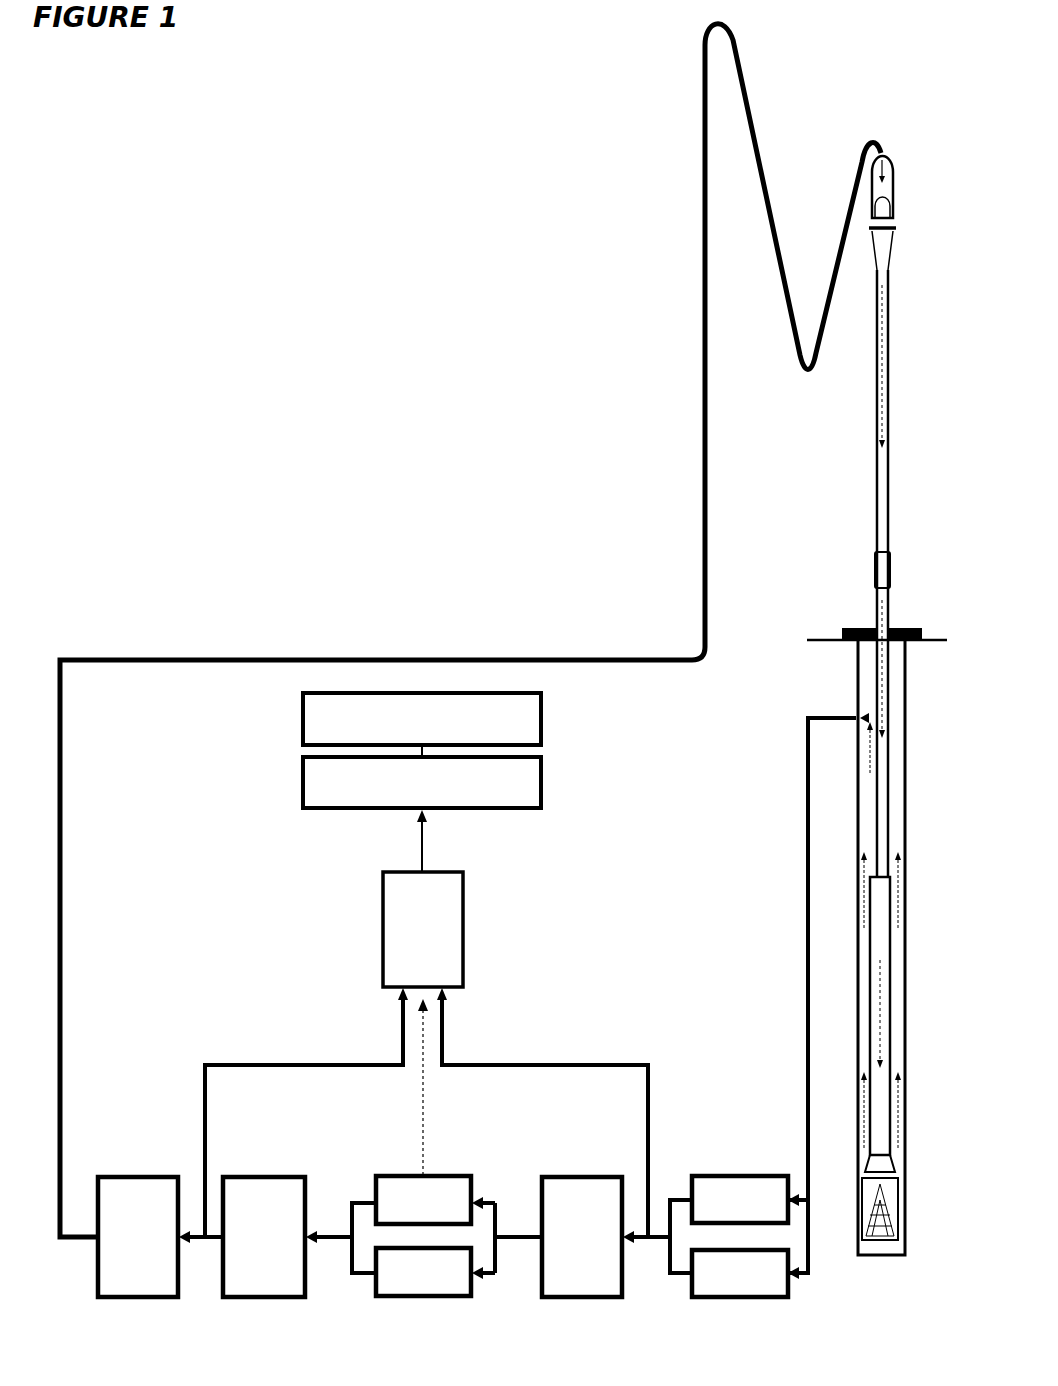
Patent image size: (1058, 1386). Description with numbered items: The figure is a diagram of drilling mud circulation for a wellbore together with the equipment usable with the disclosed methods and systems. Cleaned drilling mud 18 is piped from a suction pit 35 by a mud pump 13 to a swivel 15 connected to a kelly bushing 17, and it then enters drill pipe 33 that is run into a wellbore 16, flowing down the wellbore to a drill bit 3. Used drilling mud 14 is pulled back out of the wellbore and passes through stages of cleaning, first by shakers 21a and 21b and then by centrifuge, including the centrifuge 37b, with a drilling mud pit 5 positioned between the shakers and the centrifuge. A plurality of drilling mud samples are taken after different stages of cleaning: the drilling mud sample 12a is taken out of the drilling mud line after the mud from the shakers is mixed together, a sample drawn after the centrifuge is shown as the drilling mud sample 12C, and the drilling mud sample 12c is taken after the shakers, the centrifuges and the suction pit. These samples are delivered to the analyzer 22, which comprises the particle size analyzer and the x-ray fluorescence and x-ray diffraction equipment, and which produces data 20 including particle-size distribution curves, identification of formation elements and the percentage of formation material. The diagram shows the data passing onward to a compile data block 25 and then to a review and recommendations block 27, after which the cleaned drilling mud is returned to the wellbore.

The cleaned drilling mud 18 is at (840, 249).
The swivel 15 is at (895, 224).
The drill pipe 33 is at (892, 738).
The kelly bushing 17 is at (896, 628).
The wellbore 16 is at (907, 803).
The drill bit 3 is at (900, 1205).
The used drilling mud 14 is at (806, 918).
The review and recommendations 27 is at (543, 723).
The compile data 25 is at (543, 787).
The data 20 is at (427, 855).
The analyzer 22 is at (464, 932).
The drilling mud sample 12c is at (205, 1087).
The drilling mud sample 12a is at (650, 1087).
The drilling mud sample 12C is at (437, 1087).
The mud pump 13 is at (140, 1299).
The suction pit 35 is at (265, 1299).
The centrifuge 37b is at (422, 1299).
The drilling mud pit 5 is at (581, 1299).
The shaker 21a is at (738, 1175).
The shaker 21b is at (738, 1299).